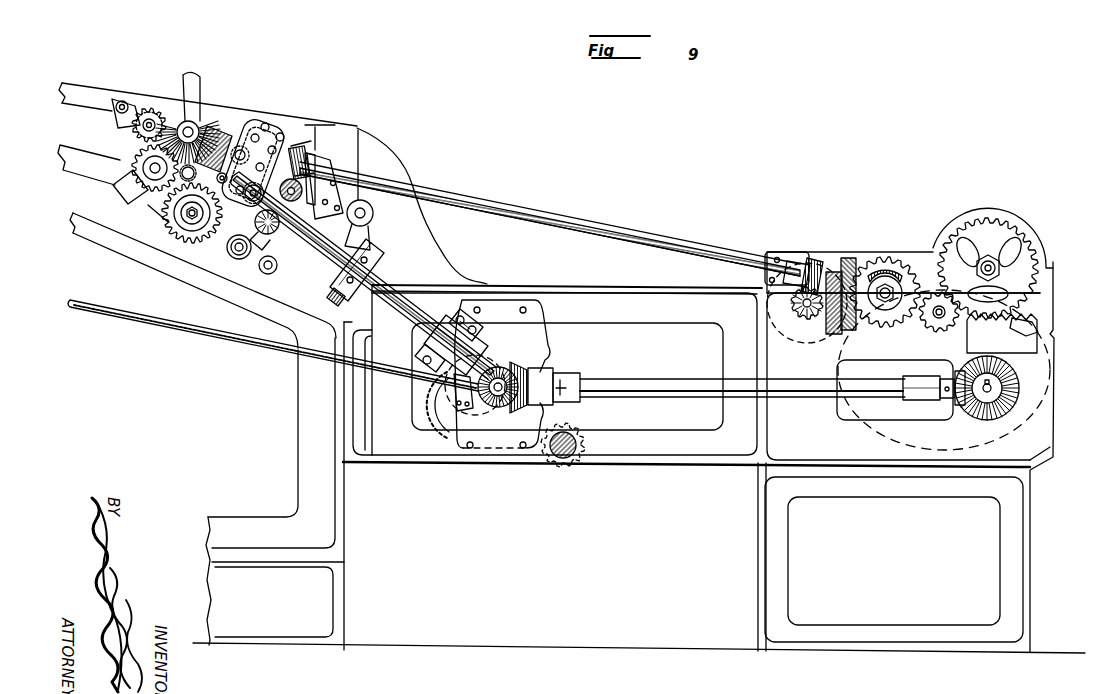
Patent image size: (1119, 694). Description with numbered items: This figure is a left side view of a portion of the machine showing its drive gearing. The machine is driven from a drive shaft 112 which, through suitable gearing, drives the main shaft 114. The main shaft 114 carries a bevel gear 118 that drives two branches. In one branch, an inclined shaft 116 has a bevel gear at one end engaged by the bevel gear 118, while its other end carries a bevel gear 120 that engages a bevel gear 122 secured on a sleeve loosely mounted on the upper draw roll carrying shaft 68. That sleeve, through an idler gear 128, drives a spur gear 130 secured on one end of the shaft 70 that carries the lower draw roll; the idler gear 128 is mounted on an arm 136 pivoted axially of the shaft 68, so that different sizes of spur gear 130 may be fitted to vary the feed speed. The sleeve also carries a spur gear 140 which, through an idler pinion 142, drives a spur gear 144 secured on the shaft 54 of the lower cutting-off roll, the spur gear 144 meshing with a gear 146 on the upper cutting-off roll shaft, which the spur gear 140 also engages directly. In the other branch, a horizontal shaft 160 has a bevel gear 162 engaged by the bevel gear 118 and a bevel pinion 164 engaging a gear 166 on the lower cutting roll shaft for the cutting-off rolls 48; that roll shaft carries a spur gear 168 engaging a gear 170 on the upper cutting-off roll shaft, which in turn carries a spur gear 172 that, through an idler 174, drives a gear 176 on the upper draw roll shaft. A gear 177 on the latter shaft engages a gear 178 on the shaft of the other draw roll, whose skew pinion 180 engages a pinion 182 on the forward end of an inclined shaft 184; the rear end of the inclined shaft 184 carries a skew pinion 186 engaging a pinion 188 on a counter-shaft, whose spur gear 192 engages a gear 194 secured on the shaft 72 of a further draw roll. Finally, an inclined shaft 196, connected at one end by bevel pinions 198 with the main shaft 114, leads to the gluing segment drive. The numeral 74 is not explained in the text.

The cutting-off rolls 48 is at (1022, 216).
The shaft 54 is at (193, 220).
The upper draw roll carrying shaft 68 is at (189, 74).
The shaft 70 is at (146, 168).
The shaft 72 is at (278, 259).
The roller 74 is at (238, 253).
The drive shaft 112 is at (563, 448).
The main shaft 114 is at (507, 413).
The inclined shaft 116 is at (412, 312).
The bevel gear 118 is at (504, 368).
The bevel gear 120 is at (250, 125).
The bevel gear 122 is at (238, 150).
The idler gear 128 is at (134, 130).
The spur gear 130 is at (150, 174).
The arm 136 is at (126, 96).
The spur gear 140 is at (152, 105).
The idler pinion 142 is at (148, 214).
The spur gear 144 is at (186, 230).
The gear 146 is at (229, 198).
The horizontal shaft 160 is at (664, 393).
The bevel gear 162 is at (540, 368).
The bevel pinion 164 is at (958, 406).
The gear 166 is at (1022, 386).
The spur gear 168 is at (1022, 346).
The gear 170 is at (1032, 323).
The spur gear 172 is at (1024, 258).
The idler 174 is at (934, 330).
The gear 176 is at (895, 258).
The gear 177 is at (847, 268).
The gear 178 is at (832, 278).
The skew pinion 180 is at (808, 318).
The pinion 182 is at (800, 262).
The inclined shaft 184 is at (560, 220).
The skew pinion 186 is at (301, 150).
The pinion 188 is at (341, 178).
The spur gear 192 is at (301, 150).
The gear 194 is at (270, 236).
The inclined shaft 196 is at (287, 349).
The bevel pinions 198 is at (452, 425).